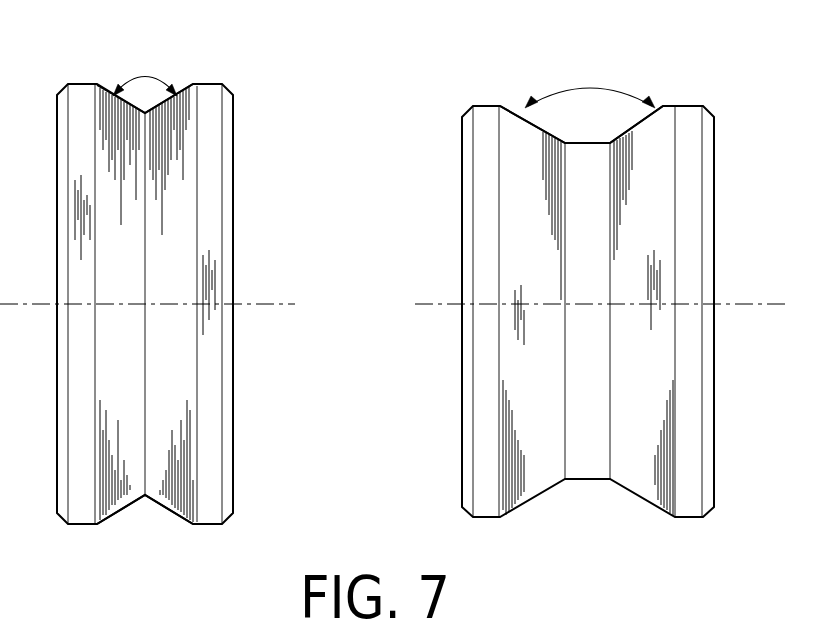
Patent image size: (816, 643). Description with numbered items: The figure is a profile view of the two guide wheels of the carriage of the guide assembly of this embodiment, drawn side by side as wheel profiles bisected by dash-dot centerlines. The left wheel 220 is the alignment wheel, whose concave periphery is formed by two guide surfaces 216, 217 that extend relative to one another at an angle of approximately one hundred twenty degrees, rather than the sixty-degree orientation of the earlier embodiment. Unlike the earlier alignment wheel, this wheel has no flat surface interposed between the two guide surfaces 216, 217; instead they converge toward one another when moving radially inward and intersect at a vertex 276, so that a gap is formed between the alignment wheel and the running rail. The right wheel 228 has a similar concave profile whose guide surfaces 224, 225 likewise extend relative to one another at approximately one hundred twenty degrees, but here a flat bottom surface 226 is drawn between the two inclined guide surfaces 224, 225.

The first roller 220 is at (285, 303).
The guide surface 216 is at (106, 92).
The guide surface 217 is at (186, 93).
The vertex 276 is at (143, 497).
The second roller 228 is at (773, 304).
The guide surface 224 is at (510, 107).
The guide surface 225 is at (662, 110).
The groove bottom surface 226 is at (593, 240).